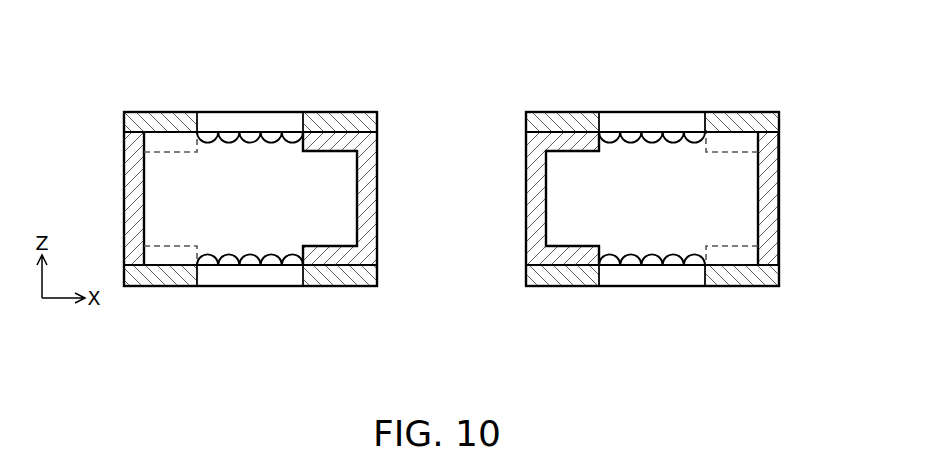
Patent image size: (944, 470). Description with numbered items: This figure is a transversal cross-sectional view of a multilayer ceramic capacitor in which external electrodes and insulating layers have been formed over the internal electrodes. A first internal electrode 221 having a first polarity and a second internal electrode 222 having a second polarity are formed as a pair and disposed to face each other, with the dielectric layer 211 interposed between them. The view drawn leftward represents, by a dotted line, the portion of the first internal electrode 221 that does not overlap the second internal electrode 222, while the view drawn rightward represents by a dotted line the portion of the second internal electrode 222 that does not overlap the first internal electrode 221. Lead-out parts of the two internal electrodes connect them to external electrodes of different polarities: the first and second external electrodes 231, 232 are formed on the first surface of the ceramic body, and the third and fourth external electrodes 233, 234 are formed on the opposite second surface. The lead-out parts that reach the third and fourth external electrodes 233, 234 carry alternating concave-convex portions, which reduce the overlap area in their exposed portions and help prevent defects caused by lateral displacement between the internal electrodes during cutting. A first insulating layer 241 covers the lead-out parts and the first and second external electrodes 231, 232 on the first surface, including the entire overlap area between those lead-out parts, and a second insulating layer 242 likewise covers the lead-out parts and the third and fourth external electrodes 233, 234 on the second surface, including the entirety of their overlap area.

The dielectric layer 211 is at (501, 199).
The first internal electrode 221 is at (345, 182).
The second internal electrode 222 is at (747, 182).
The first external electrode 231 is at (146, 286).
The second external electrode 232 is at (350, 286).
The third external electrode 233 is at (147, 112).
The fourth external electrode 234 is at (348, 112).
The first insulating layer 241 is at (243, 286).
The second insulating layer 242 is at (247, 112).